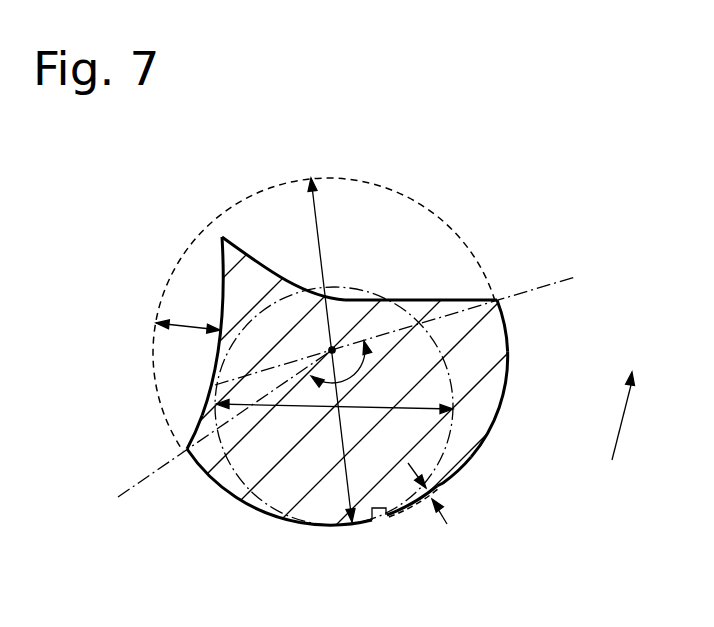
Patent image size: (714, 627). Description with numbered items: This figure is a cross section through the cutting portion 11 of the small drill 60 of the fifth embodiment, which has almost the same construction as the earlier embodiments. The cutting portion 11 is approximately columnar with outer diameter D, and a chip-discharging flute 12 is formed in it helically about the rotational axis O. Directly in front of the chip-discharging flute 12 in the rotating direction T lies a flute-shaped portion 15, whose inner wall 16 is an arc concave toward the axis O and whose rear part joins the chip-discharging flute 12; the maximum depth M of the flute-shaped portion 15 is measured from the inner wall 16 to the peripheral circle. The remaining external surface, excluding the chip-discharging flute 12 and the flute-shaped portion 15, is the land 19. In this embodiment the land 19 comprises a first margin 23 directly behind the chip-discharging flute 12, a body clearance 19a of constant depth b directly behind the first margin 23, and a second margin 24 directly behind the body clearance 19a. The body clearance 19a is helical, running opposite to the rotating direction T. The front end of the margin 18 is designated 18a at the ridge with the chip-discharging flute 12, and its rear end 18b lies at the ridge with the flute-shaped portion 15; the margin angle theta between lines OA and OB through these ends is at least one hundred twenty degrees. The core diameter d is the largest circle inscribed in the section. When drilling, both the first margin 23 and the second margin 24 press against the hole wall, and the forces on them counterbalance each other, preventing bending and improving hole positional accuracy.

The small drill 60 is at (452, 146).
The cutting portion 11 is at (503, 200).
The chip-discharging flute 12 is at (368, 225).
The flute-shaped portion 15 is at (178, 289).
The inner wall 16 is at (201, 410).
The margin 18 is at (500, 407).
The end of margin 18a is at (500, 302).
The end of margin 18b is at (187, 452).
The land 19 is at (491, 441).
The body clearance 19a is at (384, 514).
The first margin 23 is at (505, 358).
The second margin 24 is at (263, 510).